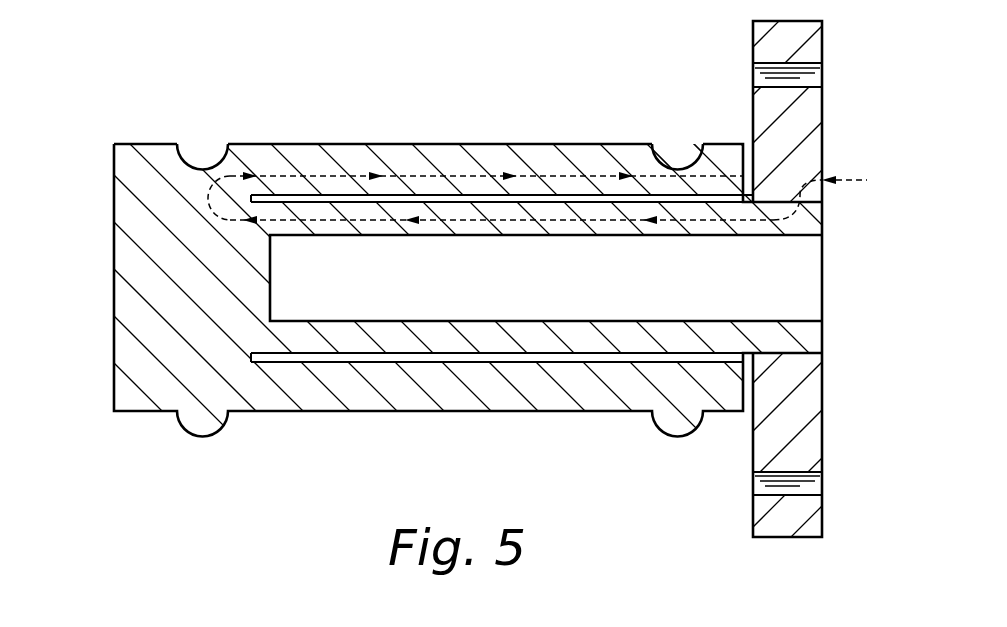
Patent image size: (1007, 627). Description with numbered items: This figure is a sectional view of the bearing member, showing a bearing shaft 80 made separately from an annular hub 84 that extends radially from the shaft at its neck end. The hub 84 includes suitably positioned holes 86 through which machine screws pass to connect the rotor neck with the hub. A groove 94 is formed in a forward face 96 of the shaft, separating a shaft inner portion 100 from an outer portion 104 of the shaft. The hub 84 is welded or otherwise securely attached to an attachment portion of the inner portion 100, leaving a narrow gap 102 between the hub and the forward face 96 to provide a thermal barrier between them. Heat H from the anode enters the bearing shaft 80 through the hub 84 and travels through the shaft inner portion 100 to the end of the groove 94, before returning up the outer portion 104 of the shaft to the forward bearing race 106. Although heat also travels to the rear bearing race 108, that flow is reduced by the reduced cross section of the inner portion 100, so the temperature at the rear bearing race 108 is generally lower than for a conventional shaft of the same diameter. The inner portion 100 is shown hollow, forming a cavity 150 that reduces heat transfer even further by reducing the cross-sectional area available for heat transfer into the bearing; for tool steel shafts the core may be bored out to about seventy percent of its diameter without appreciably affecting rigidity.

The bearing shaft 80 is at (113, 298).
The shaft inner portion 100 is at (177, 253).
The rear bearing race 108 is at (180, 152).
The forward bearing race 106 is at (650, 158).
The outer portion 104 is at (513, 157).
The groove 94 is at (385, 197).
The narrow gap 102 is at (747, 415).
The cavity 150 is at (735, 283).
The annular hub 84 is at (803, 147).
The holes 86 is at (817, 75).
The forward face 96 is at (753, 387).
The heat H is at (549, 195).